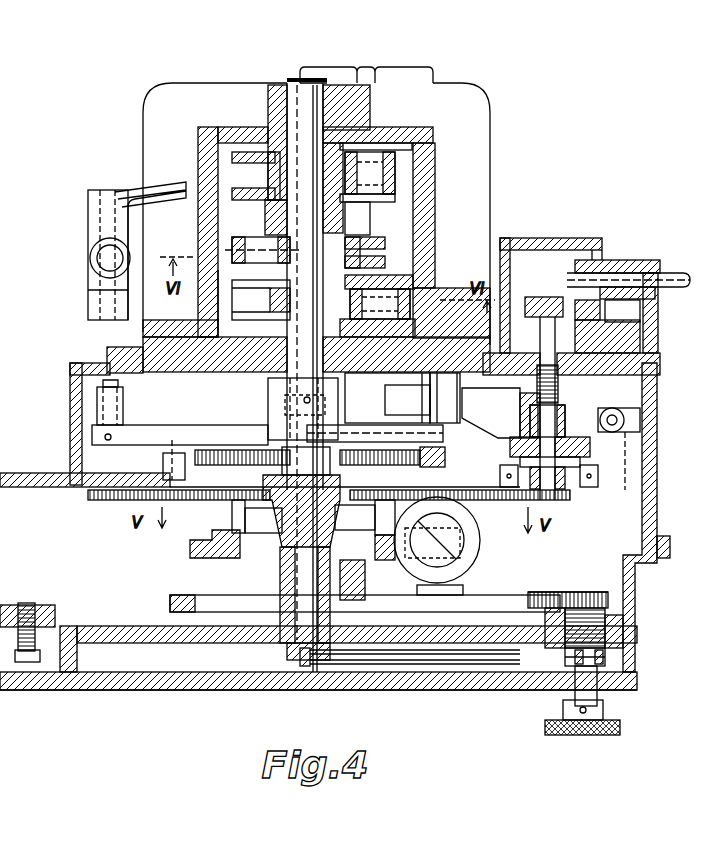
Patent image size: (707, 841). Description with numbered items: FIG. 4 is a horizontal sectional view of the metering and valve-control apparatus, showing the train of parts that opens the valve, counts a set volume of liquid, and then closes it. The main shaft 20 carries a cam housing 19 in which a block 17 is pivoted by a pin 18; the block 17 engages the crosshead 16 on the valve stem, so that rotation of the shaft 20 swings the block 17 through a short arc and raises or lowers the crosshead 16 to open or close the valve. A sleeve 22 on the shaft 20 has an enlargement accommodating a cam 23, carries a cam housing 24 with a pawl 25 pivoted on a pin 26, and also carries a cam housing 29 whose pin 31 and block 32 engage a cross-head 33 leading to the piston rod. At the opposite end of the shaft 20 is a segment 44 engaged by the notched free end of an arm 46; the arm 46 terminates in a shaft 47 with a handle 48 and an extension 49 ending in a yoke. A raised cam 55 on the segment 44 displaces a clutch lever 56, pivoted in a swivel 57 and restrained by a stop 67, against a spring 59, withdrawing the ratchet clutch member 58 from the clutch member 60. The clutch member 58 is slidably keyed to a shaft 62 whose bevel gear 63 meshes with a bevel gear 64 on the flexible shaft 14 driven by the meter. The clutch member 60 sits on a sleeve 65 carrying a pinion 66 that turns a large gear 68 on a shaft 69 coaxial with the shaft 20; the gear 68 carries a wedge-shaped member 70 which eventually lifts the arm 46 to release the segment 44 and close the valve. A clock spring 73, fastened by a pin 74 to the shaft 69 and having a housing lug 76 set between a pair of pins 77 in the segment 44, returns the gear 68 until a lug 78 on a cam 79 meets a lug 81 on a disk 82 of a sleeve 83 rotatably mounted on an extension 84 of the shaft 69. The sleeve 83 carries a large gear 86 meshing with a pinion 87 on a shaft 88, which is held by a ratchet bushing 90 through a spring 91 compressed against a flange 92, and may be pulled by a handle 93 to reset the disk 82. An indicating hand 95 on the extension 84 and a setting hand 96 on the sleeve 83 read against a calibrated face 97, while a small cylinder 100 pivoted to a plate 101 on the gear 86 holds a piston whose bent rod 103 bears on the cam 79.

The flexible shaft 14 is at (673, 279).
The crosshead 16 is at (413, 268).
The block 17 is at (400, 305).
The pin 18 is at (425, 292).
The cam housing 19 is at (280, 312).
The shaft 20 is at (294, 80).
The sleeve 22 is at (276, 207).
The cam 23 is at (357, 218).
The cam housing 24 is at (350, 262).
The pawl 25 is at (232, 248).
The pin 26 is at (215, 277).
The cam housing 29 is at (237, 172).
The pin 31 is at (378, 204).
The block 32 is at (385, 178).
The cross-head 33 is at (398, 164).
The segment 44 is at (443, 432).
The arm 46 is at (215, 428).
The shaft 47 is at (107, 343).
The handle 48 is at (96, 258).
The extension 49 is at (160, 186).
The cam 55 is at (380, 420).
The clutch lever 56 is at (410, 425).
The swivel 57 is at (626, 420).
The ratchet clutch member 58 is at (562, 430).
The spring 59 is at (558, 393).
The clutch member 60 is at (590, 450).
The shaft 62 is at (528, 408).
The bevel gear 63 is at (533, 297).
The bevel gear 64 is at (577, 256).
The sleeve 65 is at (565, 478).
The pinion 66 is at (562, 490).
The stop 67 is at (470, 398).
The large gear 68 is at (104, 500).
The shaft 69 is at (172, 430).
The wedge-shaped member 70 is at (163, 466).
The clock spring 73 is at (258, 448).
The pin 74 is at (301, 497).
The lug 76 is at (445, 460).
The pins 77 is at (448, 455).
The lug 78 is at (355, 517).
The cam 79 is at (192, 555).
The lug 81 is at (382, 558).
The disk 82 is at (255, 570).
The sleeve 83 is at (230, 594).
The extension 84 is at (318, 662).
The large gear 86 is at (540, 592).
The pinion 87 is at (578, 592).
The shaft 88 is at (597, 690).
The ratchet bushing 90 is at (620, 620).
The spring 91 is at (606, 652).
The flange 92 is at (606, 660).
The handle 93 is at (607, 735).
The indicating hand 95 is at (415, 660).
The setting hand 96 is at (485, 658).
The face 97 is at (190, 645).
The small cylinder 100 is at (470, 553).
The plate 101 is at (410, 598).
The bent rod 103 is at (478, 567).